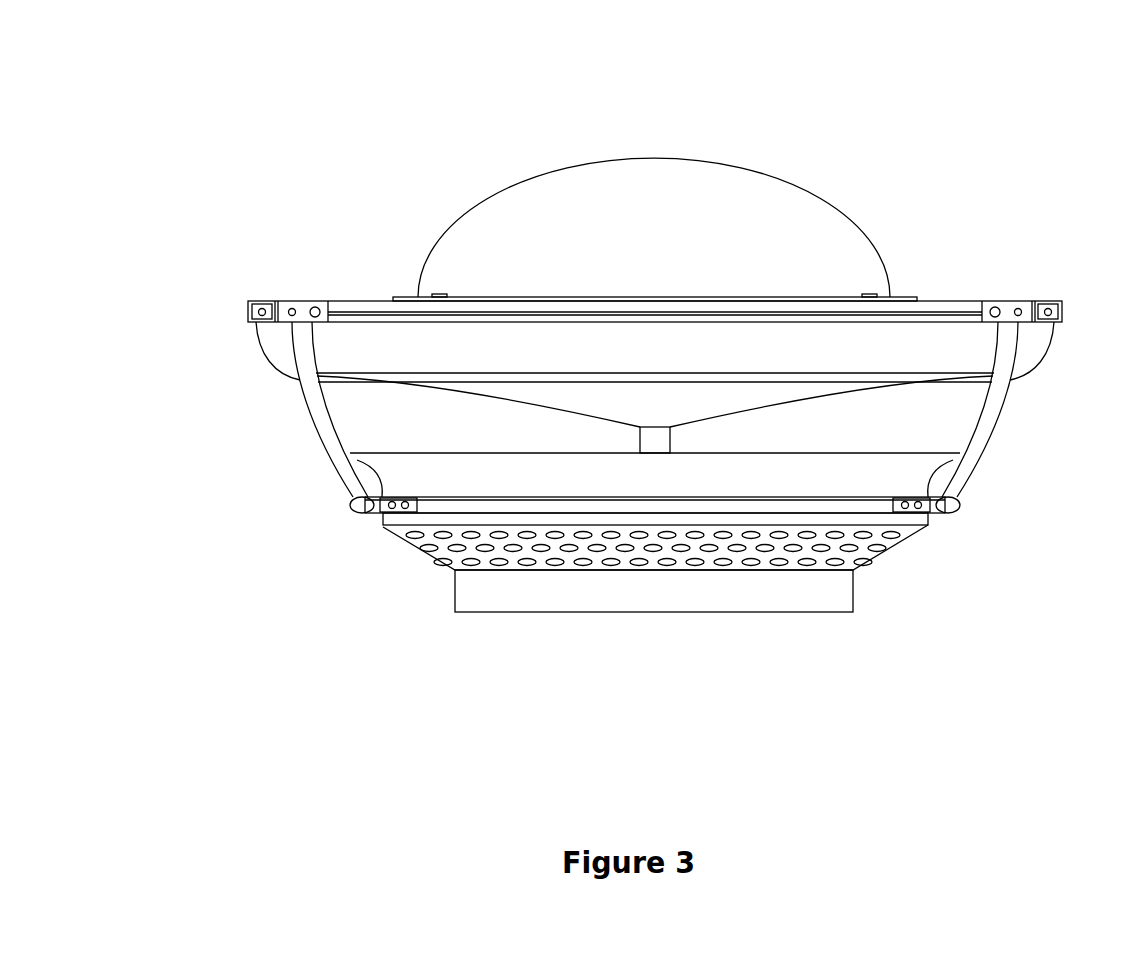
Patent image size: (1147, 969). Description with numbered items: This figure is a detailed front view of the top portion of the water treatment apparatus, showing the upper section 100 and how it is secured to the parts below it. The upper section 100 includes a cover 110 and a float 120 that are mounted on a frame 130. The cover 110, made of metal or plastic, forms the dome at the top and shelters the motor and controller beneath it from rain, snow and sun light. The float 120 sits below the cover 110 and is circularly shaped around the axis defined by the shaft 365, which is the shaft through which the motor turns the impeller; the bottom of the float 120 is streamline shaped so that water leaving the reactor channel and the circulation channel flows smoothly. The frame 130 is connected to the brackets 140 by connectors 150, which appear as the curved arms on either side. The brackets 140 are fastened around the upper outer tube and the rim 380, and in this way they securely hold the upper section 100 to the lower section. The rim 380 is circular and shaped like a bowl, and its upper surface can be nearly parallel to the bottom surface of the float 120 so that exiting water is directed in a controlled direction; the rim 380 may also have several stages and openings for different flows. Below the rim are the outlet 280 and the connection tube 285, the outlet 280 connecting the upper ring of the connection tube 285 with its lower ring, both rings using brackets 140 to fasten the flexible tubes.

The upper section 100 is at (927, 104).
The cover 110 is at (683, 244).
The float 120 is at (683, 360).
The frame 130 is at (940, 312).
The brackets 140 is at (858, 503).
The connectors 150 is at (305, 381).
The outlet 280 is at (437, 555).
The connection tube 285 is at (520, 592).
The shaft 365 is at (647, 440).
The rim 380 is at (905, 463).